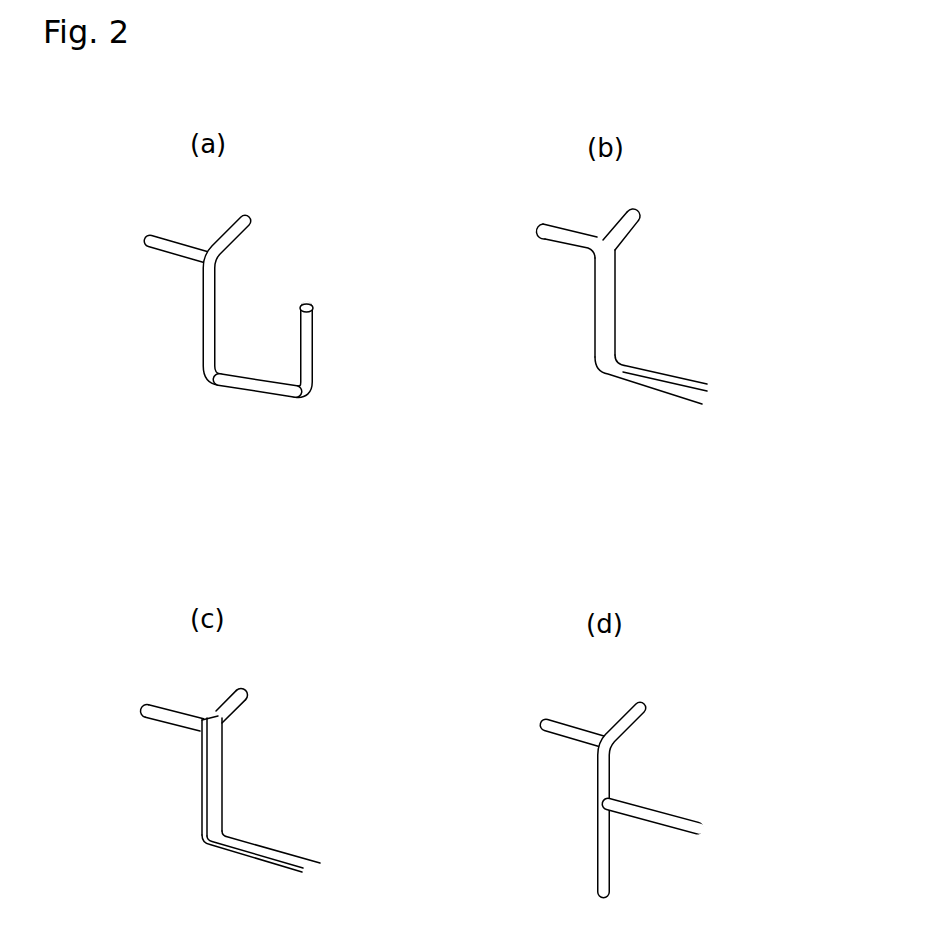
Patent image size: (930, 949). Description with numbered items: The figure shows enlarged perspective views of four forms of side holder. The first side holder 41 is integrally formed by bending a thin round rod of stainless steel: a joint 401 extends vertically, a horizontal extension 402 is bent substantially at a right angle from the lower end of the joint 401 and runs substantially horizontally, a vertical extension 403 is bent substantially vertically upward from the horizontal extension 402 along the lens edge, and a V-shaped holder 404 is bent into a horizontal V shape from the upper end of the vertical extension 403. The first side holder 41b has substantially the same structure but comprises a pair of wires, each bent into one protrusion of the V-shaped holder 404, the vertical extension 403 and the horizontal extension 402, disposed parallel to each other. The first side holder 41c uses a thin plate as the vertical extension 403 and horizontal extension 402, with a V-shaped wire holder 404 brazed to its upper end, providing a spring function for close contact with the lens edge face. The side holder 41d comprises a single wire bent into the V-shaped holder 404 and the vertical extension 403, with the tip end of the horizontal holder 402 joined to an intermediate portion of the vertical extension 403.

The first side holder 41 is at (351, 262).
The first side holder 41b is at (706, 272).
The first side holder 41c is at (316, 685).
The side holder 41d is at (707, 688).
The joint 401 is at (310, 355).
The horizontal extension 402 is at (238, 382).
The vertical extension 403 is at (205, 320).
The V-shaped holder 404 is at (191, 253).